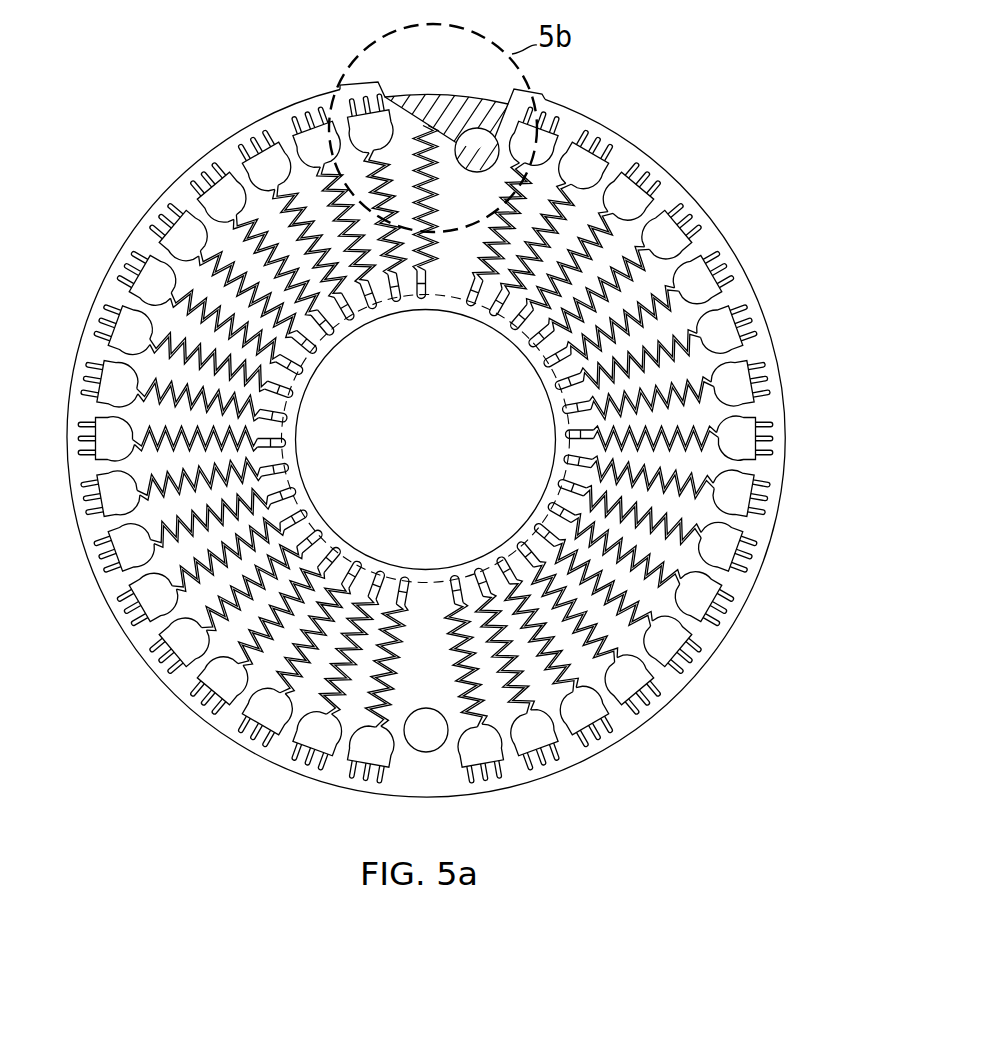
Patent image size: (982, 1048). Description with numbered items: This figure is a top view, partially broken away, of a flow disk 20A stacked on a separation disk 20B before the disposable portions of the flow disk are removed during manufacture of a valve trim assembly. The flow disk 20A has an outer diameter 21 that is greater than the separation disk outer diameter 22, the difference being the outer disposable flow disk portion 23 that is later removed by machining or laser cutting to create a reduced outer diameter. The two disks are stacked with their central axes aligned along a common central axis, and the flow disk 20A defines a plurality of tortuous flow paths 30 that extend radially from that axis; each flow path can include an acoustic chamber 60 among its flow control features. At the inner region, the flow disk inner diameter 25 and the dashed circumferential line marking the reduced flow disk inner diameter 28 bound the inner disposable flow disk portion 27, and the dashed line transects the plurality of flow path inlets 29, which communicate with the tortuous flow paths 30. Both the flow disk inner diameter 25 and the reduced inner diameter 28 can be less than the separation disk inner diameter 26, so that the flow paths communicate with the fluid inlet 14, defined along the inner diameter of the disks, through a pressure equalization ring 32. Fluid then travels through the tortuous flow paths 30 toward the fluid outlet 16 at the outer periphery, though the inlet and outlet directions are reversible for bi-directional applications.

The fluid inlet 14 is at (438, 454).
The fluid outlet 16 is at (68, 316).
The flow disk 20A is at (785, 361).
The separation disk 20B is at (470, 99).
The flow disk outer diameter 21 is at (785, 431).
The separation disk outer diameter 22 is at (428, 94).
The outer disposable flow disk portion 23 is at (770, 535).
The flow disk inner diameter 25 is at (525, 522).
The separation disk inner diameter 26 is at (295, 487).
The inner disposable flow disk portion 27 is at (369, 561).
The reduced flow disk inner diameter 28 is at (443, 297).
The flow path inlets 29 is at (557, 417).
The tortuous flow paths 30 is at (652, 284).
The pressure equalization ring 32 is at (325, 371).
The acoustic chamber 60 is at (633, 187).